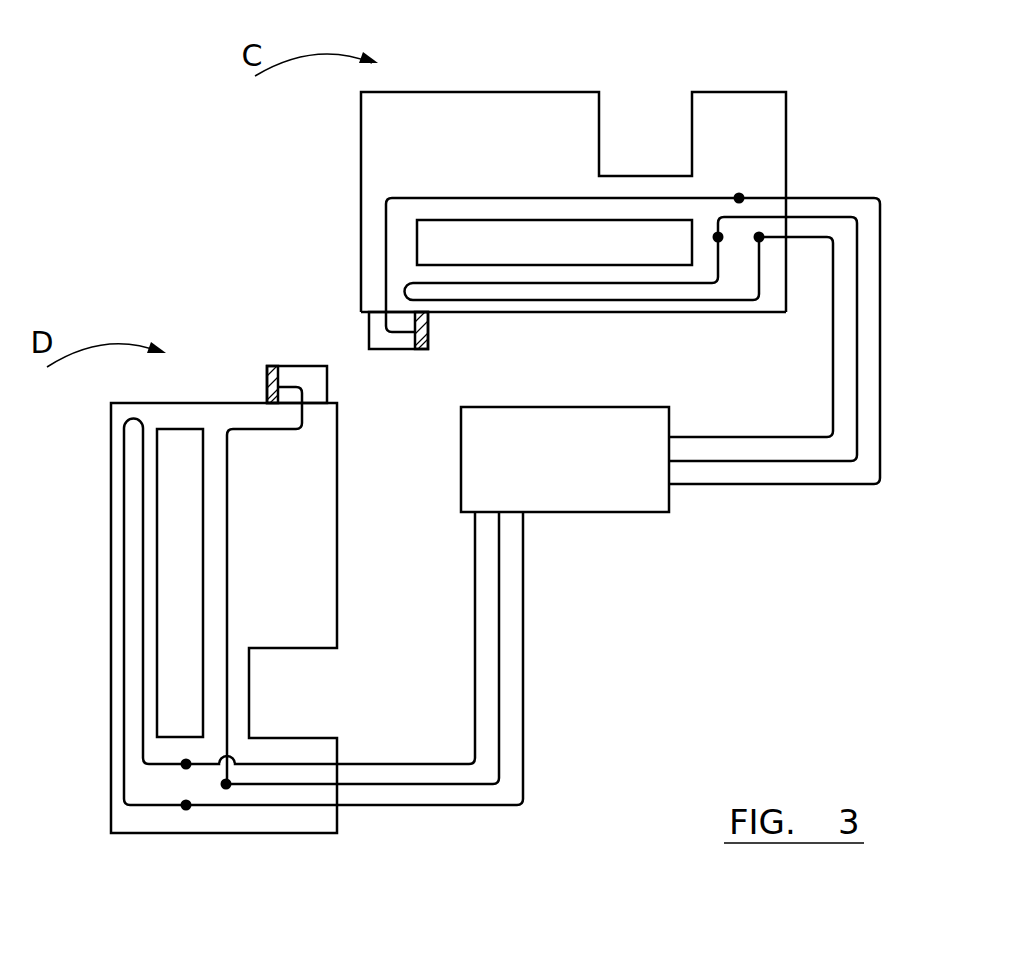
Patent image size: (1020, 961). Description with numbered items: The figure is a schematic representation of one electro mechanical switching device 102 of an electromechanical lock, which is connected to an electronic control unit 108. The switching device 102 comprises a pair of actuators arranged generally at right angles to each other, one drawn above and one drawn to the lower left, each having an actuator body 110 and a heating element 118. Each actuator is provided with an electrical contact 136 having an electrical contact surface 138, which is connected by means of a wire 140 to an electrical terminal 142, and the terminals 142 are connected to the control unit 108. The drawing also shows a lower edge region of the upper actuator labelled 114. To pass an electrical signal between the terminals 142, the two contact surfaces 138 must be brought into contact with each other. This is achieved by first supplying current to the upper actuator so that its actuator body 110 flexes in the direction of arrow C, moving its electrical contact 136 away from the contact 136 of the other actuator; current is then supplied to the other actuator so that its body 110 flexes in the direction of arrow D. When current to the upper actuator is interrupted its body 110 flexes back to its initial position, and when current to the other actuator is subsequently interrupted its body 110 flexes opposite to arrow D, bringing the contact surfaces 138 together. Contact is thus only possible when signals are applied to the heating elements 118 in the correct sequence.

The electro mechanical switching device 102 is at (309, 237).
The electronic control unit 108 is at (608, 488).
The actuator body 110 is at (544, 131).
The bottom edge of substrate 114 is at (732, 312).
The heating element 118 is at (617, 300).
The electrical contact 136 is at (393, 350).
The electrical contact surface 138 is at (428, 333).
The wire 140 is at (440, 198).
The electrical terminal 142 is at (739, 198).